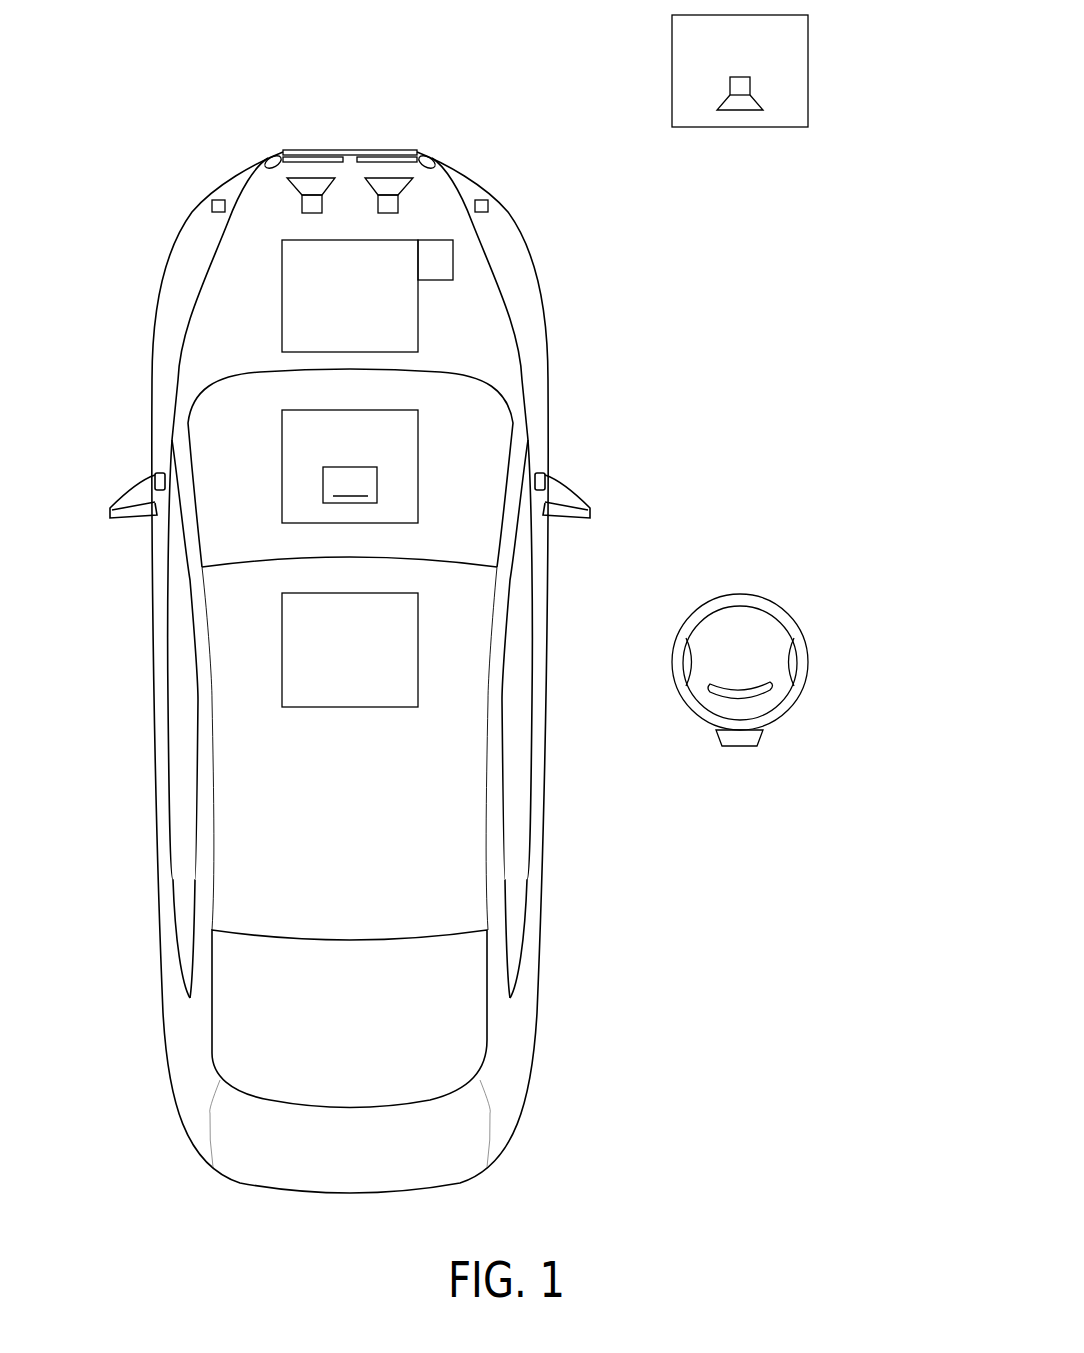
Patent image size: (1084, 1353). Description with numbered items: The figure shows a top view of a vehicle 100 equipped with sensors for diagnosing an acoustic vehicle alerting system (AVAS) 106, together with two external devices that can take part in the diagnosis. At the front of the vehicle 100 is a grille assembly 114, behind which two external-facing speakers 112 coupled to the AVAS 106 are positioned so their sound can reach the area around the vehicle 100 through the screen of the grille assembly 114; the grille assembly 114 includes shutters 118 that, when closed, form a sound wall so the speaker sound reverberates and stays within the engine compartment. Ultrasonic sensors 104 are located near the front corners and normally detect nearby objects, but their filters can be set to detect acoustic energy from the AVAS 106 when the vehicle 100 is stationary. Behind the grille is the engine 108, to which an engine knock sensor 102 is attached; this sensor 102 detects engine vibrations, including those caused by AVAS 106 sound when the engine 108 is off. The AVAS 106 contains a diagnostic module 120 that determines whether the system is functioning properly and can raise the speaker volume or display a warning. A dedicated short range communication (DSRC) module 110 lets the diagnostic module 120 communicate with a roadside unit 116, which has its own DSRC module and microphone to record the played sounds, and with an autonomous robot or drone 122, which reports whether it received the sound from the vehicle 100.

The vehicle 100 is at (525, 1107).
The engine knock sensor 102 is at (453, 260).
The ultrasonic sensors 104 is at (212, 208).
The acoustic vehicle alerting system 106 is at (384, 466).
The engine 108 is at (418, 315).
The dedicated short range communication module 110 is at (418, 645).
The external-facing speakers 112 is at (302, 203).
The grille assembly 114 is at (352, 150).
The roadside unit 116 is at (808, 68).
The shutters 118 is at (268, 158).
The diagnostic module 120 is at (350, 485).
The robot or drone 122 is at (808, 663).